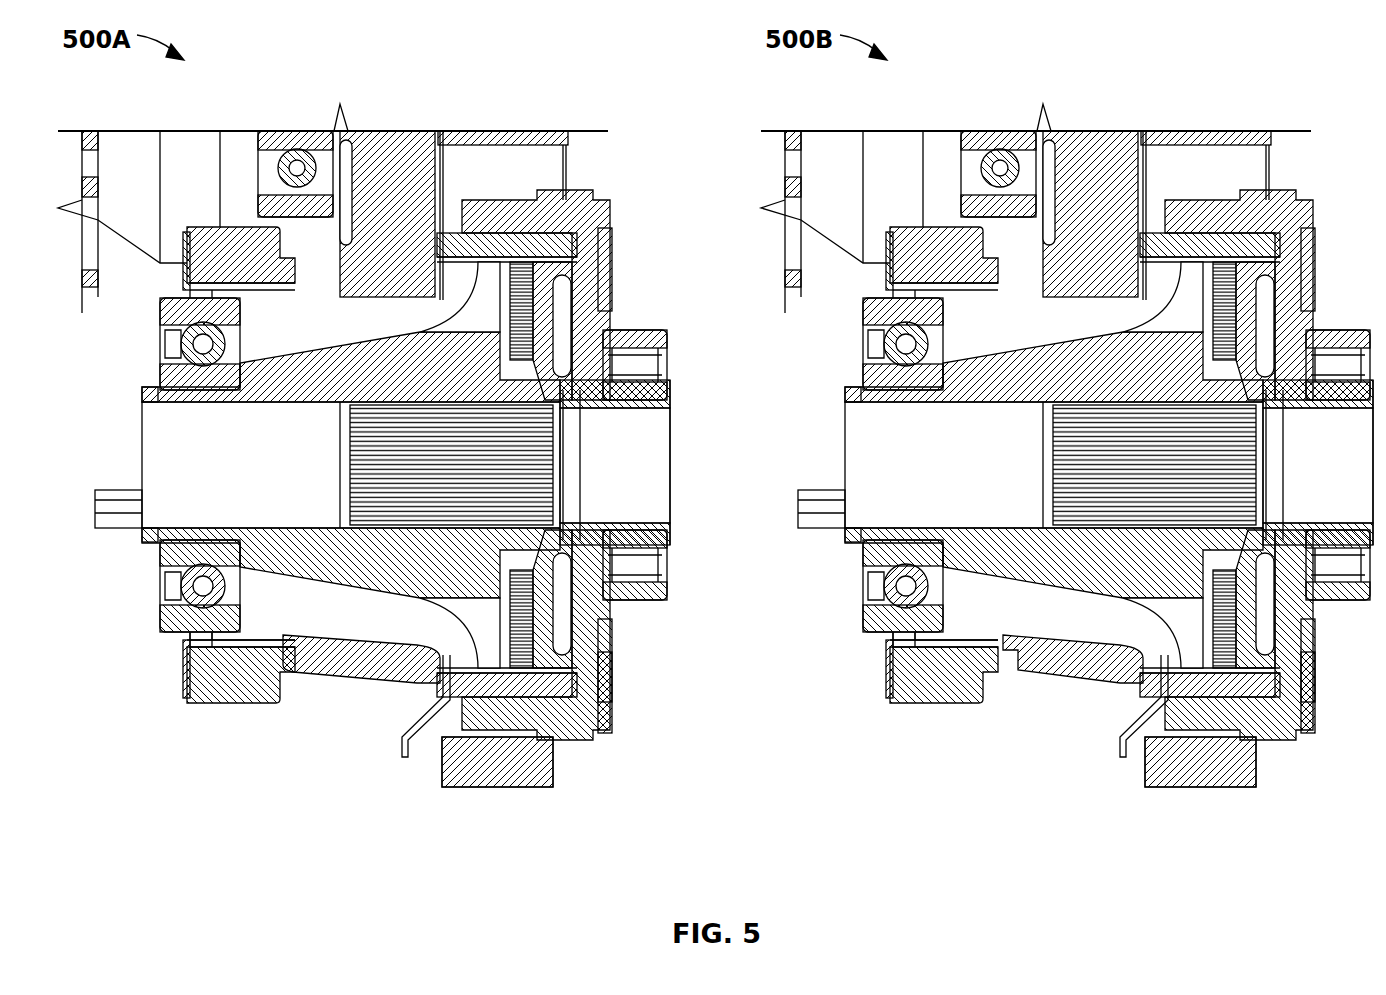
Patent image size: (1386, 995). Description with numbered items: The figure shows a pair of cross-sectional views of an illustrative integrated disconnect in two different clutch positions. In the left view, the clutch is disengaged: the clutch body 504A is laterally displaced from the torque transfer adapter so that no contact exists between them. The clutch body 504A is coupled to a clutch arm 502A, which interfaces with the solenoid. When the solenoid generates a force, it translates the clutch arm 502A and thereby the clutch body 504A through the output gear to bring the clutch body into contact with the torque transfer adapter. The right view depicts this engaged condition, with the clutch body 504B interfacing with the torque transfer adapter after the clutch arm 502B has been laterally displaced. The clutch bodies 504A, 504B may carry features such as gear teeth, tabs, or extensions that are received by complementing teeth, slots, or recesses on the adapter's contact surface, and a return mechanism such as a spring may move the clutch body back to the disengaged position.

The clutch arm 502A is at (363, 652).
The clutch arm 502B is at (1085, 709).
The clutch body 504A is at (500, 653).
The clutch body 504B is at (1200, 751).